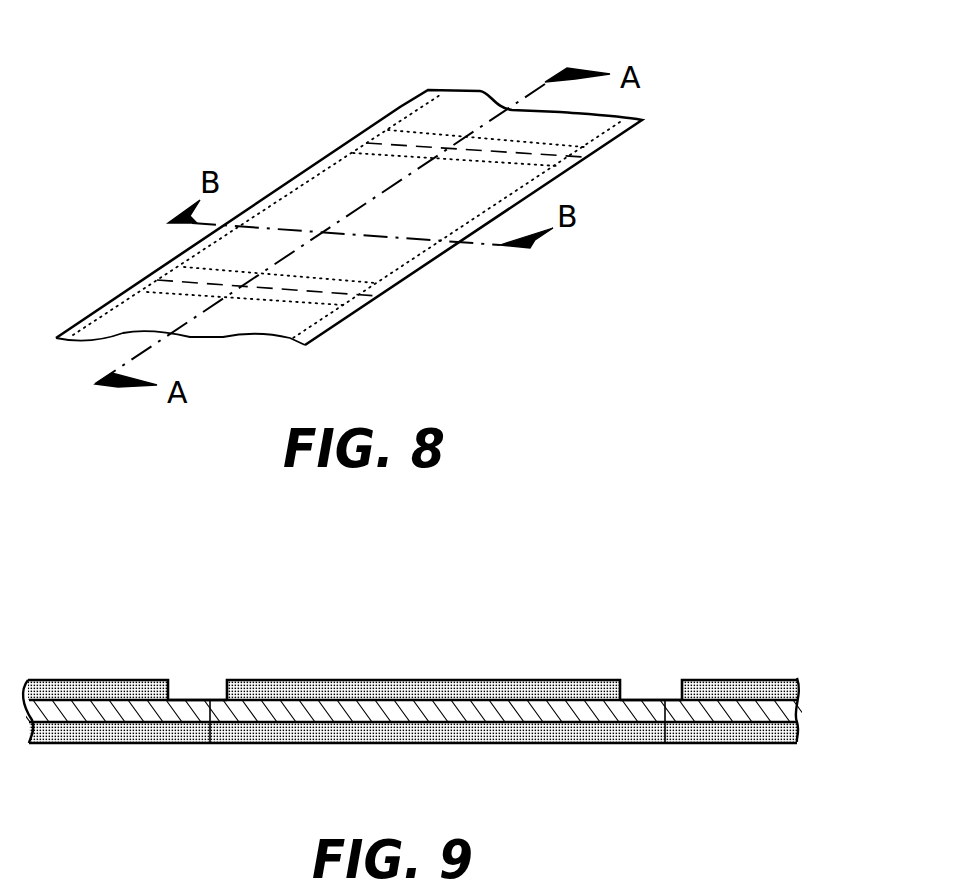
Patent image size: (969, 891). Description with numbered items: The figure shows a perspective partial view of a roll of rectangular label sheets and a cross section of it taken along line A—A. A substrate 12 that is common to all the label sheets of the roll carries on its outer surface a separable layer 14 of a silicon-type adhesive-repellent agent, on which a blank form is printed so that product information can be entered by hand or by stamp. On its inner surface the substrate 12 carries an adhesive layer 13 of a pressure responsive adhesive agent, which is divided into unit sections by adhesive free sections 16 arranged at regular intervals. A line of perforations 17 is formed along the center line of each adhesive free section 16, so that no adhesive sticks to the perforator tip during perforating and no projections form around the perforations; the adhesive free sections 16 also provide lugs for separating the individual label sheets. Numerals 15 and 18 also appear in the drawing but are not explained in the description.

In FIG. 8, the substrate 12 is at (340, 321).
In FIG. 9, the substrate 12 is at (328, 744).
In FIG. 8, the adhesive layer 13 is at (513, 195).
In FIG. 9, the separable layer 14 is at (548, 744).
In FIG. 8, the top layer 15 is at (383, 167).
In FIG. 9, the top layer 15 is at (402, 679).
In FIG. 8, the adhesive free sections 16 is at (312, 297).
In FIG. 9, the adhesive free sections 16 is at (183, 698).
In FIG. 8, the line of perforations 17 is at (503, 150).
In FIG. 9, the line of perforations 17 is at (210, 700).
In FIG. 8, the edge margin 18 is at (335, 163).